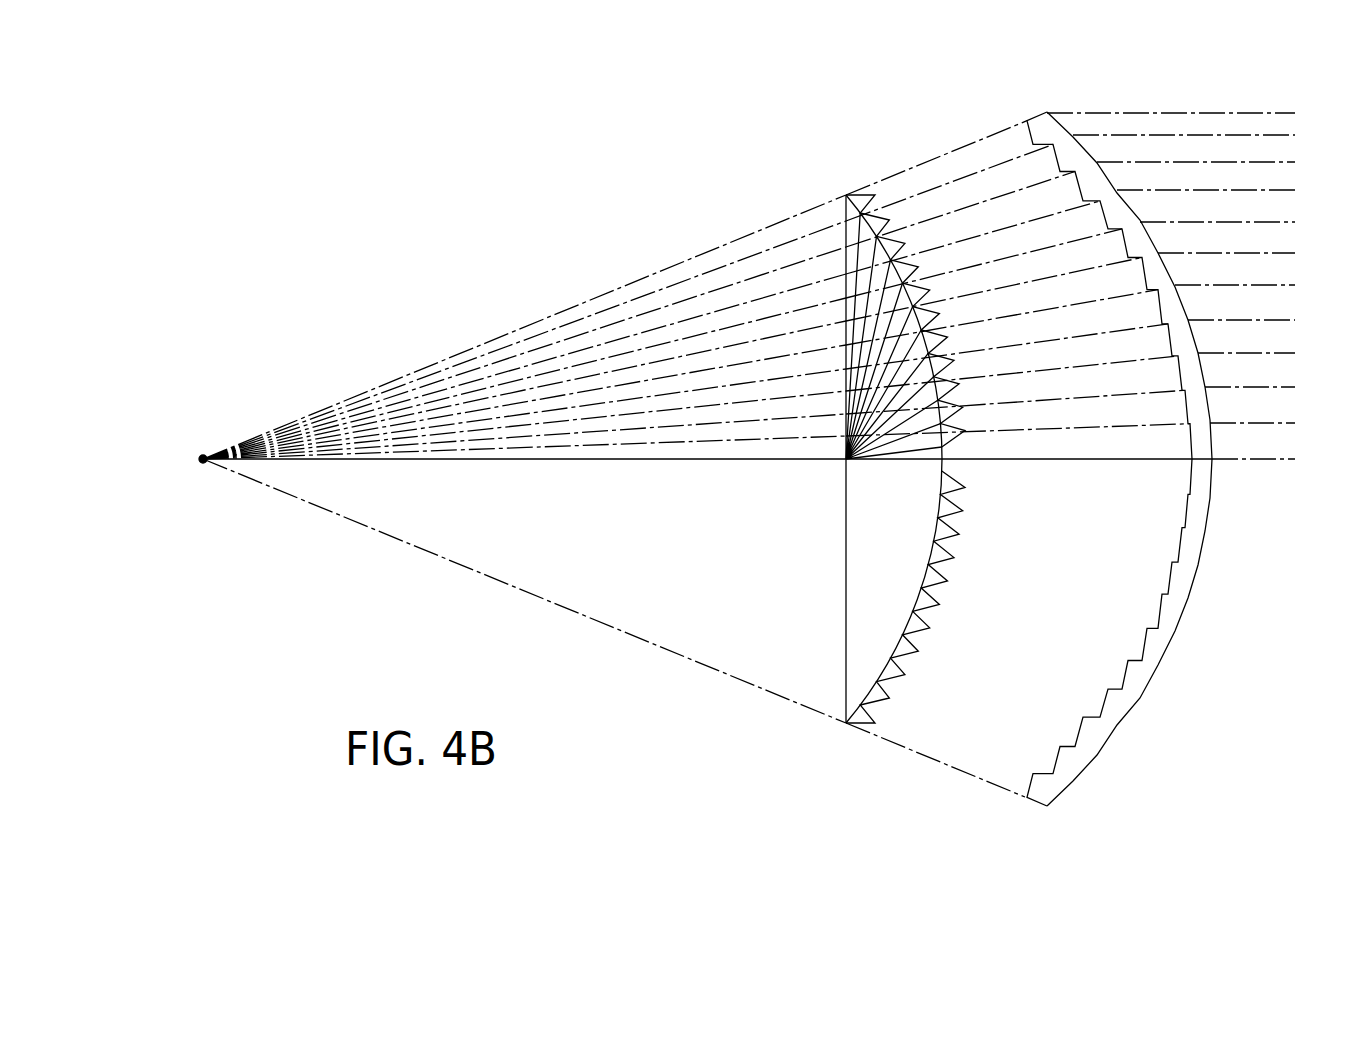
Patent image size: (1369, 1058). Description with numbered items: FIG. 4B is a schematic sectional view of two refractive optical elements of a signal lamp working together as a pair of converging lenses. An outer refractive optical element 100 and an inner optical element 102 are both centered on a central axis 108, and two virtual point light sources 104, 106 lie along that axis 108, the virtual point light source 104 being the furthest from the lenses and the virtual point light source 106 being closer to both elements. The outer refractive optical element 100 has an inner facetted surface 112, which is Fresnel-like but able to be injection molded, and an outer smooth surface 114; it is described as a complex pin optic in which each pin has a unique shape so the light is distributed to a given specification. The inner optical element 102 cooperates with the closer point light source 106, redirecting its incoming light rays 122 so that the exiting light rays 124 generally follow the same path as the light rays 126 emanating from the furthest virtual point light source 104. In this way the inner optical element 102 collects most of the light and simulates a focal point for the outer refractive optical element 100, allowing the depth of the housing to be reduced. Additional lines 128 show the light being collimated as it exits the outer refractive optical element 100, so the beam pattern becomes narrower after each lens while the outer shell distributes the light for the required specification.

The outer refractive optical element 100 is at (1099, 459).
The inner optical element 102 is at (874, 500).
The virtual point light source 104 is at (203, 463).
The virtual point light source 106 is at (845, 461).
The axis 108 is at (627, 462).
The inner facetted surface 112 is at (1057, 760).
The outer smooth surface 114 is at (1140, 703).
The incoming light rays 122 is at (908, 443).
The exiting light rays 124 is at (1085, 429).
The light rays 126 is at (712, 443).
The additional lines 128 is at (1165, 112).